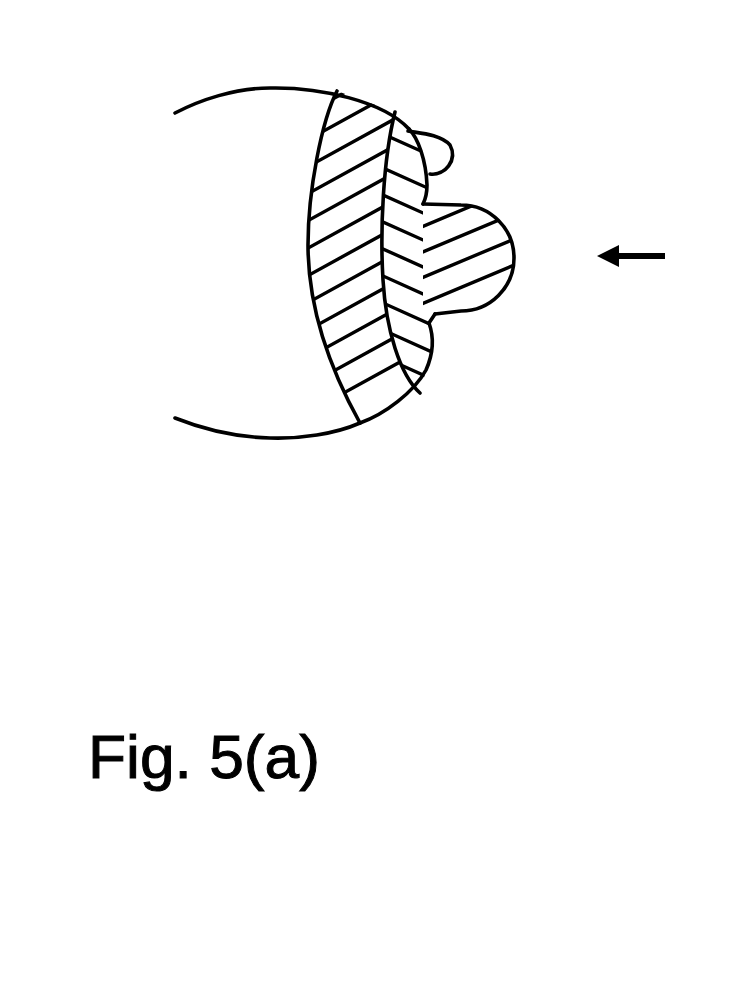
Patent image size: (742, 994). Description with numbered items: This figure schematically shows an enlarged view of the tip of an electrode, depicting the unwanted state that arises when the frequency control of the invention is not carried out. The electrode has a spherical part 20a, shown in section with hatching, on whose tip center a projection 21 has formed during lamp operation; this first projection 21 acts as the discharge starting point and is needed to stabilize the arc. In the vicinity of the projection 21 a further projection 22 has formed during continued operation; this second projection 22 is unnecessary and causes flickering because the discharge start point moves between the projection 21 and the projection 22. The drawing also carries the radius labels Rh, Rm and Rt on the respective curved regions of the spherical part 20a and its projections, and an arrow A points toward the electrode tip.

The hatched lens surface portion of ball 20a is at (333, 408).
The protrusion 21 is at (477, 237).
The knob 22 is at (447, 142).
The radius of protrusion Rh is at (512, 245).
The middle layer thickness/radius Rm is at (412, 348).
The radius of lens surface Rt is at (362, 385).
The direction arrow A is at (656, 253).